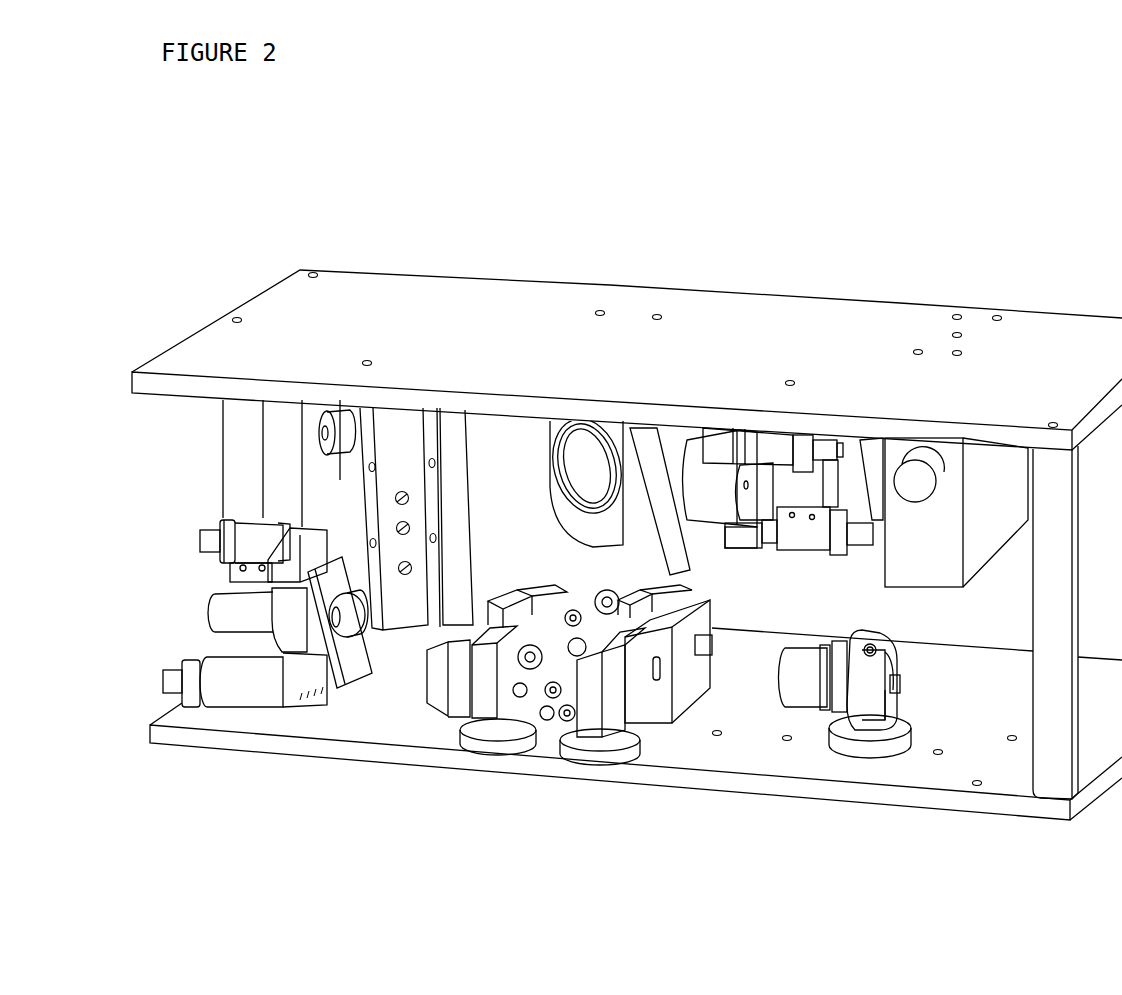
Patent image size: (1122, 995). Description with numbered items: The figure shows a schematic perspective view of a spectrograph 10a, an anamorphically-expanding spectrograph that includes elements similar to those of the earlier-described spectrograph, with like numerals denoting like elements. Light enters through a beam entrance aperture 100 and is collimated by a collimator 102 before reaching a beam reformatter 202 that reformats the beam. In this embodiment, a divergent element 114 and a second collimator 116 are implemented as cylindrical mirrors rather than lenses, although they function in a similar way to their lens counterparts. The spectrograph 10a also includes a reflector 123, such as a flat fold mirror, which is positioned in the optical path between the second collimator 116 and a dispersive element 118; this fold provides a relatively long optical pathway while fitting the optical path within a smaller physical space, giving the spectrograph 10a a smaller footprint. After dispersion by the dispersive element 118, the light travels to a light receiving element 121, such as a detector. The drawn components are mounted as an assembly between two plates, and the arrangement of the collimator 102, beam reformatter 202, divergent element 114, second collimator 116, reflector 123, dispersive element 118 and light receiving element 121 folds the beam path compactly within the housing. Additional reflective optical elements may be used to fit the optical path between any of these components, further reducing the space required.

The spectrograph 10a is at (800, 247).
The beam entrance aperture 100 is at (900, 690).
The collimator 102 is at (797, 687).
The divergent element 114 is at (352, 653).
The second collimator 116 is at (702, 537).
The dispersive element 118 is at (577, 450).
The light receiving element 121 is at (937, 508).
The reflector 123 is at (451, 455).
The beam reformatter 202 is at (690, 792).